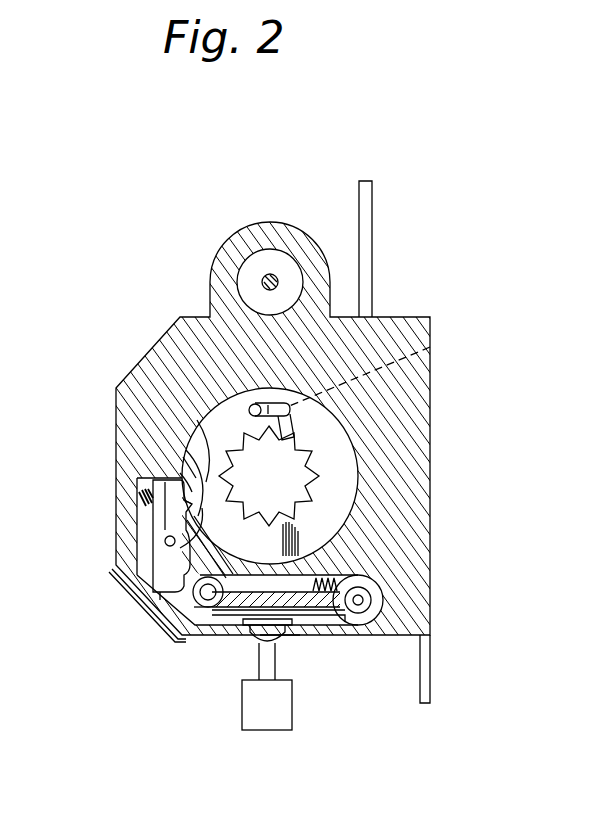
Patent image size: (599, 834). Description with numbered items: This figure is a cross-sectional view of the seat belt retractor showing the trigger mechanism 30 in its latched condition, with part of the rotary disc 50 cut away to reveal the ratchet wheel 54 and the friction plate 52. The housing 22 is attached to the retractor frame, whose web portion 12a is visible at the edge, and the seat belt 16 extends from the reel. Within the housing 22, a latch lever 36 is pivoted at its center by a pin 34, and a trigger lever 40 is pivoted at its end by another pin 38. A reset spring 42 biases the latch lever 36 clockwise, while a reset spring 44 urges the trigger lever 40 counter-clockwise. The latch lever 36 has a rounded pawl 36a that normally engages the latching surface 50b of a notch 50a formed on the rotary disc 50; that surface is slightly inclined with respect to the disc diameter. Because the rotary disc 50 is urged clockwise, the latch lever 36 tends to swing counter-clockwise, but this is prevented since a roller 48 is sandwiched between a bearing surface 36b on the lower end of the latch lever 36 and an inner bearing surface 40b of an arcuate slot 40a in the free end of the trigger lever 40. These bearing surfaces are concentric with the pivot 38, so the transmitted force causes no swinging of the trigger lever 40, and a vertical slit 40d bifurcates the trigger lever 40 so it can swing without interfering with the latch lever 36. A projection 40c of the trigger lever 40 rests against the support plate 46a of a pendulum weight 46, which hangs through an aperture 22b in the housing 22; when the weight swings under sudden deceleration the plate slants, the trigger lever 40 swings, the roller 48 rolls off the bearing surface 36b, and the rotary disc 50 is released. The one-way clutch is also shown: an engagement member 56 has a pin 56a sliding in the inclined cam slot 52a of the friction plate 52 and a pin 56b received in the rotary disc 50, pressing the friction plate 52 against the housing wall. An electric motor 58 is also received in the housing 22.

The web portion 12a is at (426, 678).
The seat belt 16 is at (373, 192).
The housing 22 is at (432, 329).
The aperture 22b is at (285, 640).
The trigger mechanism 30 is at (160, 627).
The pin 34 is at (164, 539).
The latch lever 36 is at (165, 508).
The rounded pawl 36a is at (189, 500).
The bearing surface 36b is at (182, 612).
The pin 38 is at (360, 600).
The trigger lever 40 is at (342, 606).
The arcuate slot 40a is at (190, 596).
The inner bearing surface 40b is at (245, 627).
The projection 40c is at (280, 616).
The vertical slit 40d is at (187, 613).
The reset spring 42 is at (140, 496).
The reset spring 44 is at (340, 578).
The pendulum weight 46 is at (262, 722).
The support plate 46a is at (287, 636).
The roller 48 is at (214, 612).
The rotary disc 50 is at (176, 548).
The notch 50a is at (180, 473).
The latching surface 50b is at (183, 457).
The friction plate 52 is at (341, 458).
The cam slot 52a is at (295, 412).
The ratchet wheel 54 is at (357, 462).
The engagement member 56 is at (258, 402).
The pin 56a is at (440, 348).
The pin 56b is at (198, 420).
The electric motor 58 is at (279, 262).